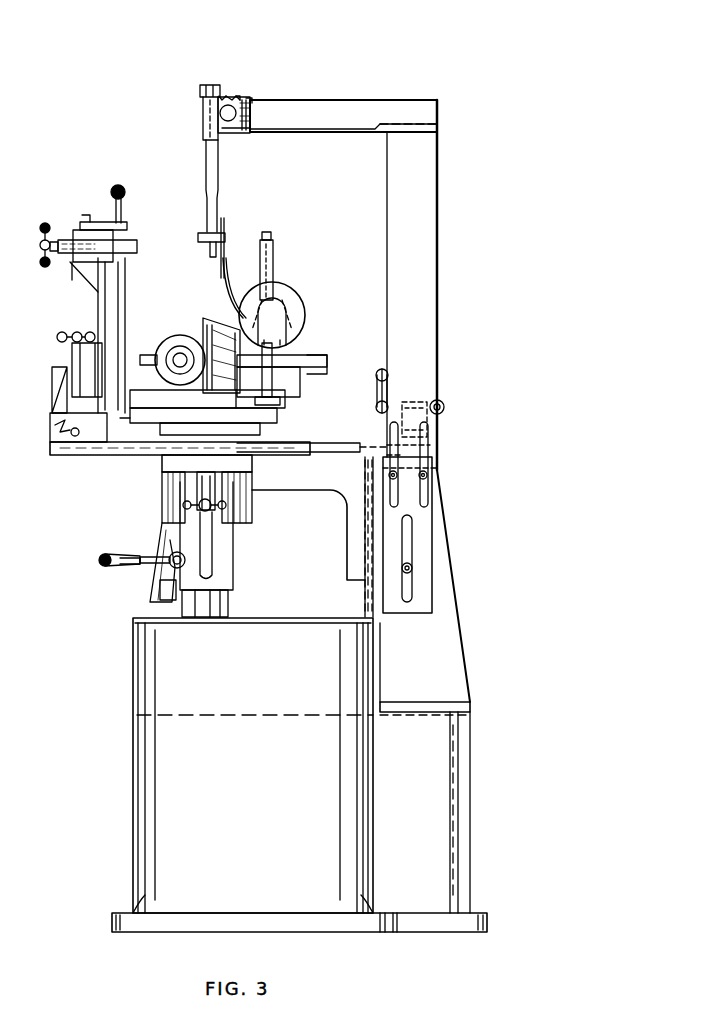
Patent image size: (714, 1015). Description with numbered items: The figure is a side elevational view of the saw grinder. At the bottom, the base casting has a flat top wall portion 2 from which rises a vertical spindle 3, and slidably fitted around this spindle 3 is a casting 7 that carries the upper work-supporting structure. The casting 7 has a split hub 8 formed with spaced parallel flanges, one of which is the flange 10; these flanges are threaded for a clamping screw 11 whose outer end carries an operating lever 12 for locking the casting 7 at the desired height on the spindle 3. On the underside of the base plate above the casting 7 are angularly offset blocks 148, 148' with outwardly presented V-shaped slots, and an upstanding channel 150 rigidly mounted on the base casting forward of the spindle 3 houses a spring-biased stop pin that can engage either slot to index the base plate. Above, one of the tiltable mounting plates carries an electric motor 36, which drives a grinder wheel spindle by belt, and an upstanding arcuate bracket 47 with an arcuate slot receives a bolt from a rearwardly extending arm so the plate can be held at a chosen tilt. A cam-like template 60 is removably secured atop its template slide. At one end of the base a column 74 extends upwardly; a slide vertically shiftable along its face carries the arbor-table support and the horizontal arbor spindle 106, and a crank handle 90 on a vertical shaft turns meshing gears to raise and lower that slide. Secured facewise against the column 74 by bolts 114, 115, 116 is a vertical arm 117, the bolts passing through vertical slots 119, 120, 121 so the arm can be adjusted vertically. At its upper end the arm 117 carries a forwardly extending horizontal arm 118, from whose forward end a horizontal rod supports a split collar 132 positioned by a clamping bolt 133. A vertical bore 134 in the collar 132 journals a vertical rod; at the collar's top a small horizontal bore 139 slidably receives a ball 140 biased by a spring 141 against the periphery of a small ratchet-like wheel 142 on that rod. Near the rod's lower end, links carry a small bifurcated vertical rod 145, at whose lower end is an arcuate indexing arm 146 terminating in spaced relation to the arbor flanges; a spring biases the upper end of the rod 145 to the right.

The flat top wall portion 2 is at (278, 620).
The vertical spindle 3 is at (228, 607).
The casting 7 is at (235, 560).
The split hub 8 is at (172, 598).
The flange 10 is at (170, 585).
The clamping screw 11 is at (169, 556).
The operating lever 12 is at (99, 559).
The electric motor 36 is at (300, 304).
The upstanding arcuate bracket 47 is at (275, 252).
The cam-like template 60 is at (128, 226).
The column 74 is at (462, 647).
The crank handle 90 is at (444, 404).
The horizontal arbor spindle 106 is at (312, 356).
The bolt 114 is at (430, 476).
The bolt 115 is at (398, 481).
The bolt 116 is at (412, 568).
The vertical arm 117 is at (437, 338).
The horizontal arm 118 is at (372, 100).
The vertical slot 119 is at (430, 424).
The vertical slot 120 is at (382, 421).
The vertical slot 121 is at (415, 592).
The split collar 132 is at (244, 134).
The clamping bolt 133 is at (250, 100).
The vertical bore 134 is at (203, 115).
The small horizontal bore 139 is at (230, 98).
The ball 140 is at (223, 98).
The spring 141 is at (240, 98).
The ratchet-like wheel 142 is at (200, 95).
The bifurcated vertical rod 145 is at (224, 222).
The arcuate indexing arm 146 is at (218, 289).
The angularly offset block 148 is at (264, 500).
The angularly offset block 148' is at (175, 491).
The upstanding channel 150 is at (120, 578).